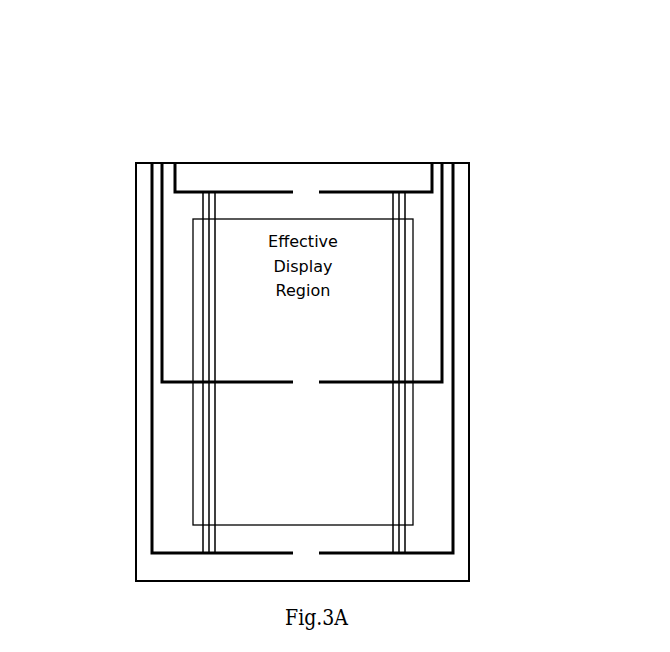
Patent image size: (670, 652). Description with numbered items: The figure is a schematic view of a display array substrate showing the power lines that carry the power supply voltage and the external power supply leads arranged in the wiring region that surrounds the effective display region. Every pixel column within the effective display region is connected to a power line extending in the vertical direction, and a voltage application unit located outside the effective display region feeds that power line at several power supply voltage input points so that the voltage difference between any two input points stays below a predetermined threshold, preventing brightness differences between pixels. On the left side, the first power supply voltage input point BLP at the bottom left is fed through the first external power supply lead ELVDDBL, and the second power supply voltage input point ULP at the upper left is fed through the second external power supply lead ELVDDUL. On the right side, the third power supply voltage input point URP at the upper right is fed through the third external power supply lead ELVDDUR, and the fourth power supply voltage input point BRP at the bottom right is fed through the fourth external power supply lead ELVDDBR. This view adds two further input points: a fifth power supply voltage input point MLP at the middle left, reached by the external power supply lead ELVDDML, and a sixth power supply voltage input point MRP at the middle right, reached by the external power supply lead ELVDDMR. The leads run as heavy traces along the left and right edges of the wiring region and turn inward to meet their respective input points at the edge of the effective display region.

The second external power supply lead ELVDDUL is at (170, 166).
The third external power supply lead ELVDDUR is at (432, 177).
The external power supply lead ELVDDML is at (160, 166).
The external power supply lead ELVDDMR is at (446, 168).
The first external power supply lead ELVDDBL is at (135, 172).
The fourth external power supply lead ELVDDBR is at (490, 182).
The second power supply voltage input point ULP is at (197, 196).
The fifth power supply voltage input point MLP is at (186, 376).
The first power supply voltage input point BLP is at (197, 550).
The third power supply voltage input point URP is at (412, 199).
The sixth power supply voltage input point MRP is at (420, 374).
The fourth power supply voltage input point BRP is at (410, 545).